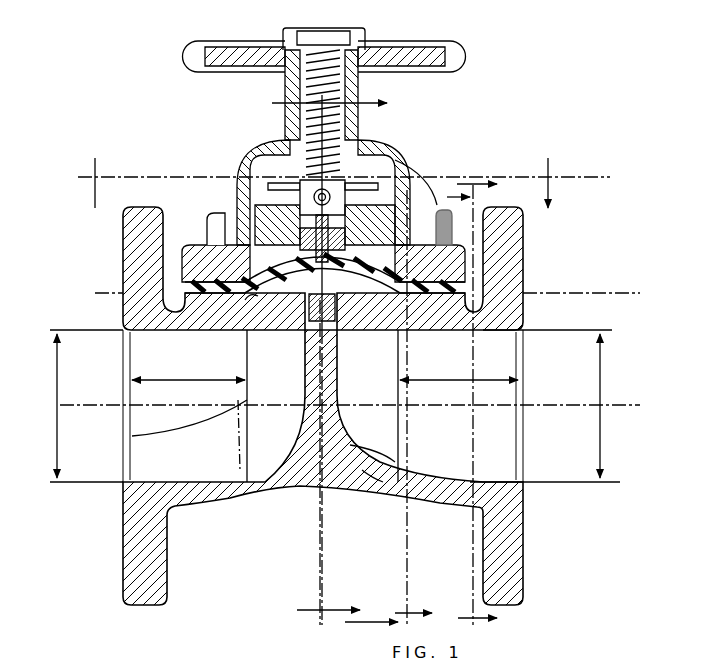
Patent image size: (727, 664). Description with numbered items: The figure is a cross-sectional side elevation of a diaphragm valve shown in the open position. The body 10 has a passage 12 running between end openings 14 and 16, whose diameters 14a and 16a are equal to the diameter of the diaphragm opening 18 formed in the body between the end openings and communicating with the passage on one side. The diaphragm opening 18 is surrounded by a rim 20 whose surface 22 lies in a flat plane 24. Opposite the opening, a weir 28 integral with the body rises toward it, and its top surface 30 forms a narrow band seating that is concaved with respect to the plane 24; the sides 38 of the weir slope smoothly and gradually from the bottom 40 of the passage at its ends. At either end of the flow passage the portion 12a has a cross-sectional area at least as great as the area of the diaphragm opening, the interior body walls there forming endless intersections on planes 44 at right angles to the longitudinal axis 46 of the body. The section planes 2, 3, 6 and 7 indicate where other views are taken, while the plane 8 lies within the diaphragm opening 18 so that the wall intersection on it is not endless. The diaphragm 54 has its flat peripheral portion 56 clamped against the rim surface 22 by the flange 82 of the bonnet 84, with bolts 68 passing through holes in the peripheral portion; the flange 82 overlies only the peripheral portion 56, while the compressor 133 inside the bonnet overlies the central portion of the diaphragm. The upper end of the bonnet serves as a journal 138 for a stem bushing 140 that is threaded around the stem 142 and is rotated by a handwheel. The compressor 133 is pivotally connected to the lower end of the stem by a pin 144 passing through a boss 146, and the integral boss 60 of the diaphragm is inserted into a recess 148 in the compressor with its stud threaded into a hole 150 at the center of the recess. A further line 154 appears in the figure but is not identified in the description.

The section plane 2- 2 is at (320, 356).
The section plane 3- 3 is at (344, 172).
The section plane 6- 6 is at (469, 400).
The section plane 7- 7 is at (426, 407).
The section plane 8- 8 is at (359, 467).
The body 10 is at (246, 505).
The passage 12 is at (128, 446).
The passage portion 12a is at (325, 365).
The end opening 14 is at (522, 360).
The diameter of end opening 14a is at (605, 406).
The end opening 16 is at (120, 332).
The diameter of end opening 16a is at (60, 406).
The diaphragm opening 18 is at (398, 322).
The rim 20 is at (176, 362).
The rim surface 22 is at (214, 240).
The flat plane 24 is at (572, 293).
The weir 28 is at (262, 408).
The top surface of weir 30 is at (336, 322).
The sides of the weir 38 is at (372, 486).
The bottom of the passage 40 is at (512, 478).
The planes 44 is at (425, 447).
The longitudinal axis 46 is at (578, 406).
The diaphragm 54 is at (322, 397).
The flat peripheral portion 56 is at (192, 278).
The boss 60 is at (425, 257).
The bolts 68 is at (218, 205).
The bonnet flange 82 is at (428, 215).
The bonnet 84 is at (238, 152).
The compressor 133 is at (420, 198).
The journal 138 is at (362, 128).
The stem bushing 140 is at (300, 148).
The stem 142 is at (372, 152).
The pin 144 is at (300, 190).
The boss 146 is at (345, 190).
The recess 148 is at (322, 268).
The hole 150 is at (263, 305).
The seat edge 154 is at (246, 472).